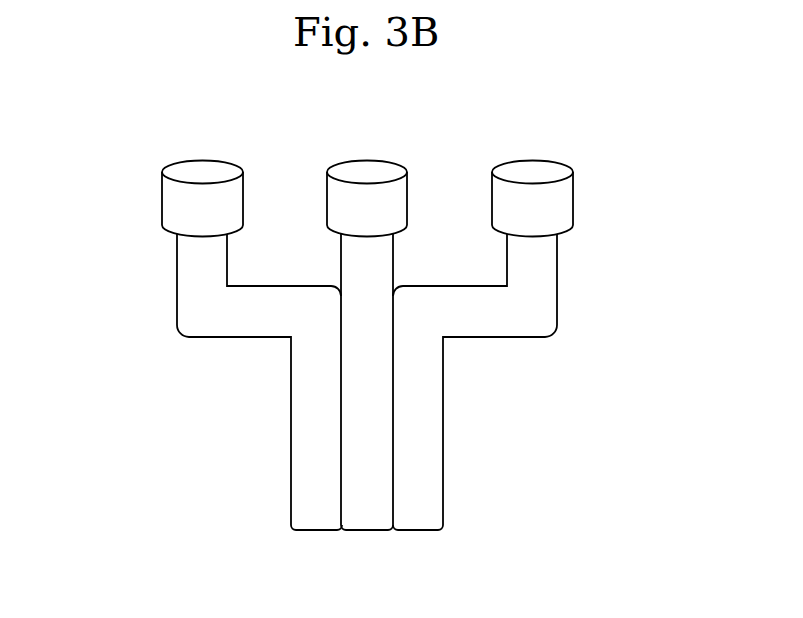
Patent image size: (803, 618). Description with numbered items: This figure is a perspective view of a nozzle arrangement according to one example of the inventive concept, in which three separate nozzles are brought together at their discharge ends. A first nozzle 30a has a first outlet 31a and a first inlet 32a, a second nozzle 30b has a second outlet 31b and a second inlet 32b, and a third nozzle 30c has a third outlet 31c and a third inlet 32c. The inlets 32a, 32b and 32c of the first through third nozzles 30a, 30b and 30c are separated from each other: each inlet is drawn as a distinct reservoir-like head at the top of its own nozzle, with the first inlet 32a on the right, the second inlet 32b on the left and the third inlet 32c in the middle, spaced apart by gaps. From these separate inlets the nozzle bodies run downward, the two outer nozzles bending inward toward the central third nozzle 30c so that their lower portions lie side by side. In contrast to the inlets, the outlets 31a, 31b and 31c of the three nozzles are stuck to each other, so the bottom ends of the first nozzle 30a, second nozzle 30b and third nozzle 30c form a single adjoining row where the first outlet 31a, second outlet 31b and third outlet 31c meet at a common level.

The first nozzle 30a is at (440, 430).
The second nozzle 30b is at (297, 432).
The third nozzle 30c is at (378, 389).
The first outlet 31a is at (420, 532).
The second outlet 31b is at (315, 531).
The third outlet 31c is at (367, 534).
The first inlet 32a is at (567, 197).
The second inlet 32b is at (167, 199).
The third inlet 32c is at (365, 167).